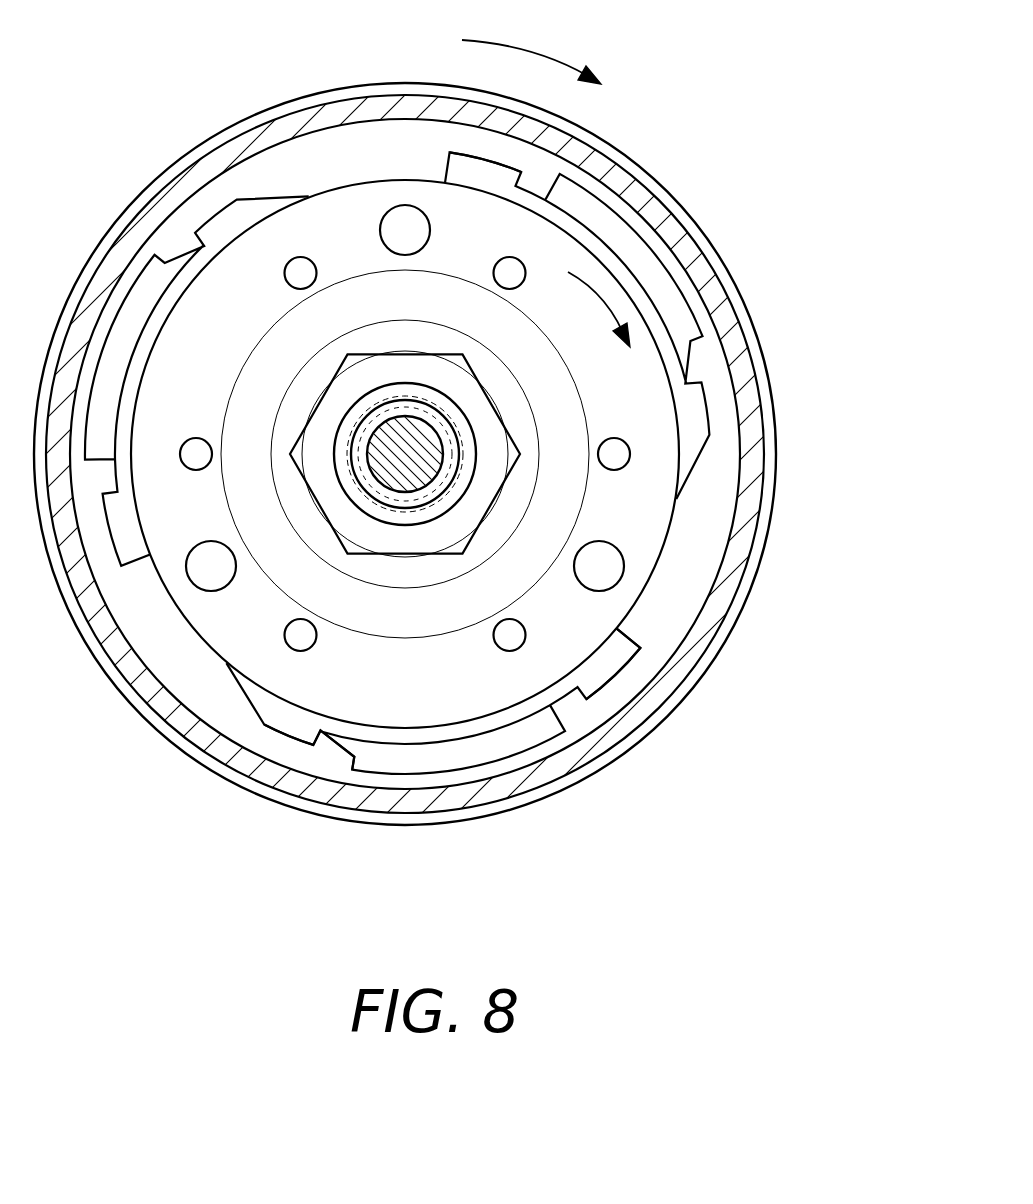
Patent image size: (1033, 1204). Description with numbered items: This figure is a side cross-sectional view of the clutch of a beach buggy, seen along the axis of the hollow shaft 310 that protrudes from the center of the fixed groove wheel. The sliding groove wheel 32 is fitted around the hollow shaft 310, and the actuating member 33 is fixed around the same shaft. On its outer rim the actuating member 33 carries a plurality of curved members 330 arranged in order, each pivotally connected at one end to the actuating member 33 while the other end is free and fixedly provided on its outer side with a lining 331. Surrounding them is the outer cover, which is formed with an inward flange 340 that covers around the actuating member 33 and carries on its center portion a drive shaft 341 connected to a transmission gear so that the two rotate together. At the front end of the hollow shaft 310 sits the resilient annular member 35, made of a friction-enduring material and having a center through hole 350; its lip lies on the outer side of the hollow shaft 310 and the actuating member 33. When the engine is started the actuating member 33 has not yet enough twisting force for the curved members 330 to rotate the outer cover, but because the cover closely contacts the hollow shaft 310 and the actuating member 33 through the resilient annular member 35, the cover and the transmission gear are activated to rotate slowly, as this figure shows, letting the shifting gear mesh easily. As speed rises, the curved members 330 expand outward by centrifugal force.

The sliding groove wheel 32 is at (683, 205).
The inward flange 340 is at (702, 273).
The curved member 330 is at (688, 432).
The lining 331 is at (590, 185).
The drive shaft 341 is at (544, 653).
The actuating member 33 is at (637, 527).
The center through hole 350 is at (320, 507).
The resilient annular member 35 is at (395, 510).
The hollow shaft 310 is at (413, 517).